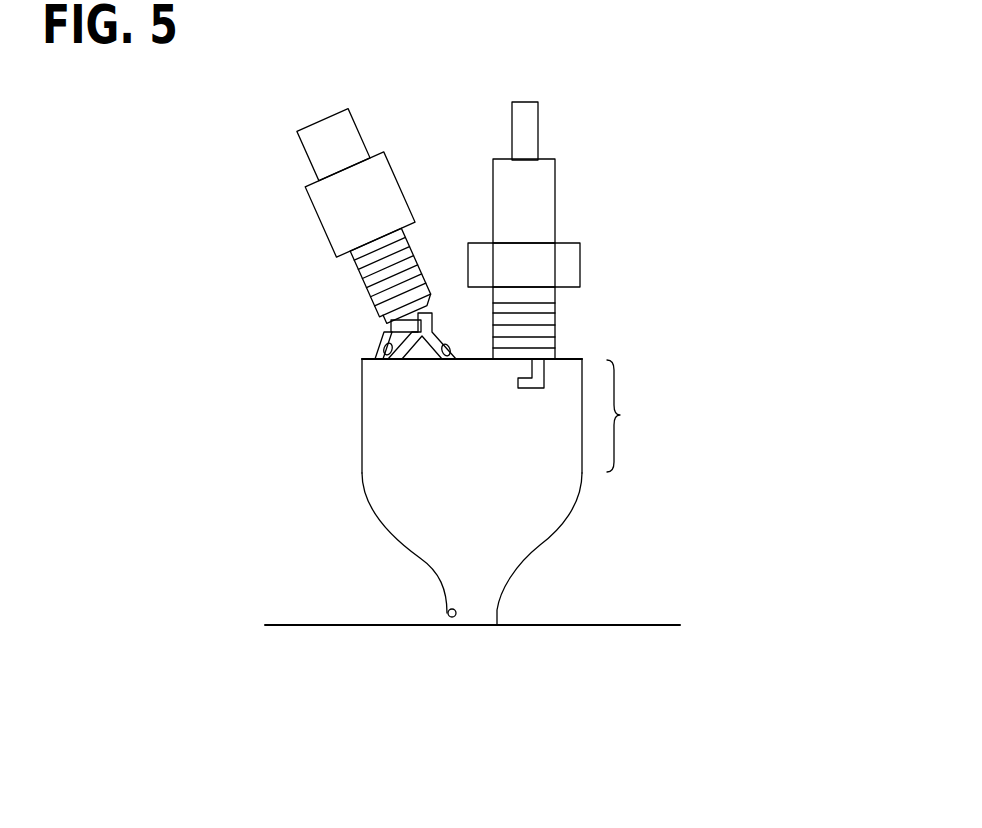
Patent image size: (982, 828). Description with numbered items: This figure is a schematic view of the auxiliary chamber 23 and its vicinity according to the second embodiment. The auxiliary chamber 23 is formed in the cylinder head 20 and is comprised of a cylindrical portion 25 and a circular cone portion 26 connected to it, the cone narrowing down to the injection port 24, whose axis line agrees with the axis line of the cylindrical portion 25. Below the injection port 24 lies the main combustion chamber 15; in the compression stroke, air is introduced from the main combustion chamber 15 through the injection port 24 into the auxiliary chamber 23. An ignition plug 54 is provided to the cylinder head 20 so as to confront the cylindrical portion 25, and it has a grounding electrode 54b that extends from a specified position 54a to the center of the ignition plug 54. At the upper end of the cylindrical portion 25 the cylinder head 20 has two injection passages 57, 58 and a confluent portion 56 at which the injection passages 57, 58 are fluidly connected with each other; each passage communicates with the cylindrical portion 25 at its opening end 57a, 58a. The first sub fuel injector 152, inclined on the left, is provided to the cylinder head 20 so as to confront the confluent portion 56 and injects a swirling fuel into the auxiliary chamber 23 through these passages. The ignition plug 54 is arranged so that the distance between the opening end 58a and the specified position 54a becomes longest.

The first sub fuel injector 152 is at (313, 124).
The ignition plug 54 is at (557, 200).
The specified position 54a is at (536, 358).
The grounding electrode 54b is at (544, 375).
The confluent portion 56 is at (418, 328).
The injection passage 57 is at (441, 345).
The opening end 57a is at (450, 361).
The injection passage 58 is at (385, 347).
The opening end 58a is at (386, 361).
The auxiliary chamber 23 is at (413, 455).
The injection port 24 is at (448, 613).
The cylindrical portion 25 is at (634, 416).
The circular cone portion 26 is at (607, 483).
The cylinder head 20 is at (577, 607).
The main combustion chamber 15 is at (375, 660).